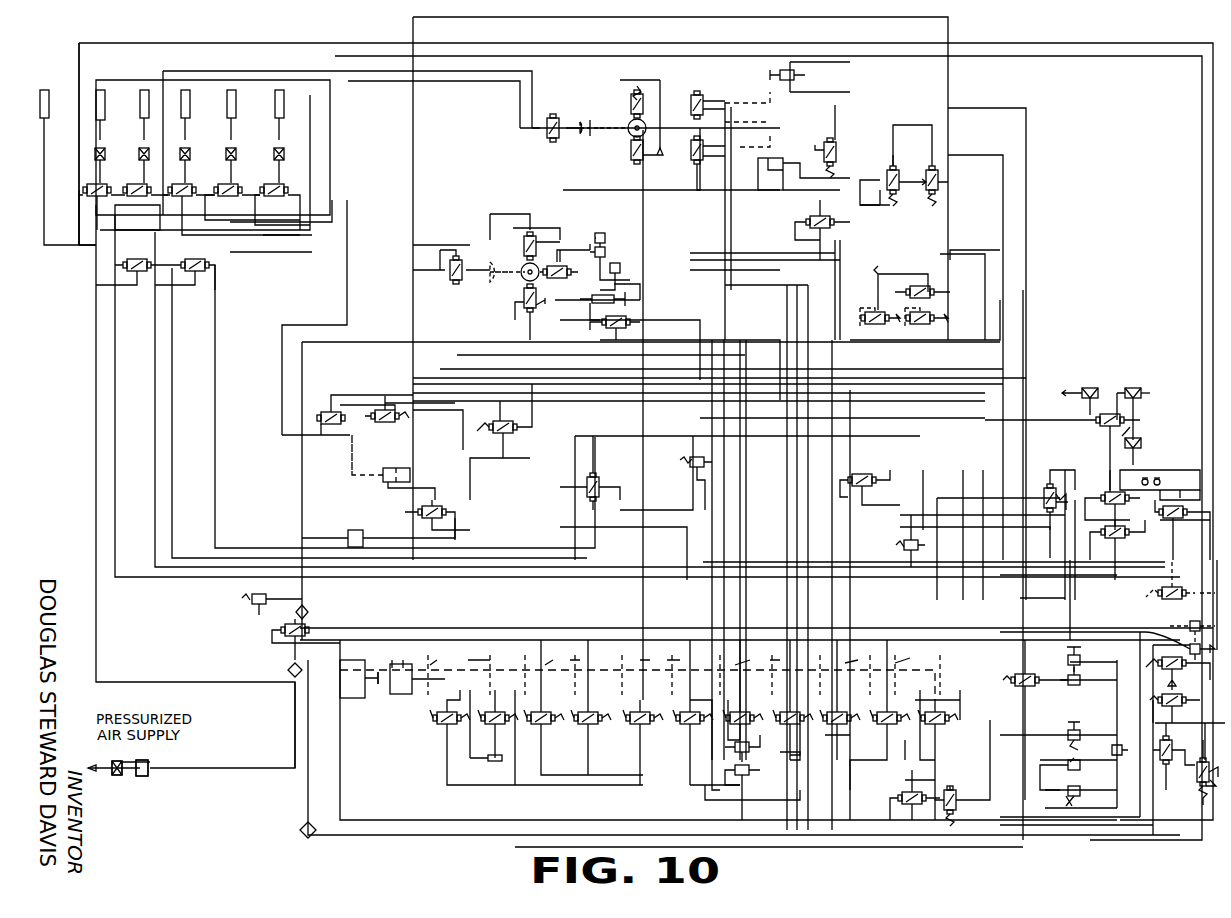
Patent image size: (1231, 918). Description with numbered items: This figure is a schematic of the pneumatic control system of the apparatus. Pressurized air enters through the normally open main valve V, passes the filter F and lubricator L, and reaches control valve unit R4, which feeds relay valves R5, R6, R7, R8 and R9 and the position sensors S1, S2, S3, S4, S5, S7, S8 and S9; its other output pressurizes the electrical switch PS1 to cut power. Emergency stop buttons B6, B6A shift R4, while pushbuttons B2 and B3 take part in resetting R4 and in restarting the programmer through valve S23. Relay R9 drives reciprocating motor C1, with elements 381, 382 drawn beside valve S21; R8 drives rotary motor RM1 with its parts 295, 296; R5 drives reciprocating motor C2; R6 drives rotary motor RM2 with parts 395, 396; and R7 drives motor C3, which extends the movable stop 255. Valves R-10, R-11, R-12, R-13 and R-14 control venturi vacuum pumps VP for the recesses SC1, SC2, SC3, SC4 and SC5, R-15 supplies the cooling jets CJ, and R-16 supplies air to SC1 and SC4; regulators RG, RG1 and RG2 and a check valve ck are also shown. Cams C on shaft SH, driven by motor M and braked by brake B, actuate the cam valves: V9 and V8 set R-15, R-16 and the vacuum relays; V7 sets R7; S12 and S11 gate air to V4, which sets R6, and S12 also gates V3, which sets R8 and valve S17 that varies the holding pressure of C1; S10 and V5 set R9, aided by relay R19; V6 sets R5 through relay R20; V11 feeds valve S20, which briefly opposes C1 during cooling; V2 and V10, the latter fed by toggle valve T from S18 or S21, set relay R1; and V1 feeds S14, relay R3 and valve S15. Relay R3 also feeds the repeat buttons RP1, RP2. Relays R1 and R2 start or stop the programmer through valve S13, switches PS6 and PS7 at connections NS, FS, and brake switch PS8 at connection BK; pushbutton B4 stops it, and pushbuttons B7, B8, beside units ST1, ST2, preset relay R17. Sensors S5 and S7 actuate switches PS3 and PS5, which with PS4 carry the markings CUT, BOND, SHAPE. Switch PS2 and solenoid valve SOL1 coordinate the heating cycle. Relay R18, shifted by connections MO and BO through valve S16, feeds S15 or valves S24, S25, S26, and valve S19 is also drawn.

The cooling air jets CJ is at (40, 105).
The vacuum-clamping recess SC1 is at (113, 135).
The vacuum-clamping recess SC2 is at (140, 98).
The vacuum-clamping recess SC3 is at (198, 136).
The vacuum-clamping recess SC4 is at (244, 136).
The vacuum-clamping recess SC5 is at (292, 136).
The venturi vacuum pump unit VP is at (197, 147).
The control valve unit R-10 is at (106, 205).
The control valve unit R-11 is at (142, 207).
The control valve unit R-12 is at (231, 200).
The control valve unit R-13 is at (252, 192).
The control valve unit R-14 is at (282, 197).
The control valve unit R-15 is at (134, 262).
The control valve unit R-16 is at (205, 265).
The control valve unit R8 is at (552, 120).
The rotary air motor RM1 is at (596, 134).
The position sensing valve unit S9 is at (640, 107).
The cam 296 is at (630, 126).
The cam follower valve 295 is at (630, 150).
The position sensing valve unit S8 is at (646, 166).
The position sensing valve unit S1 is at (697, 96).
The position sensing valve unit S2 is at (735, 163).
The valve 382 is at (770, 100).
The valve 381 is at (759, 132).
The valve unit S21 is at (826, 145).
The reciprocating air motor C1 is at (760, 183).
The control valve unit R9 is at (815, 220).
The signal valve S19 is at (888, 178).
The valve unit S20 is at (940, 190).
The check valve ck is at (891, 200).
The valve unit S17 is at (932, 290).
The regulator RG1 is at (871, 322).
The regulator RG2 is at (925, 320).
The control valve unit R6 is at (456, 258).
The rotary air motor RM2 is at (490, 283).
The cam 396 is at (525, 268).
The position sensing valve unit S7 is at (525, 237).
The cam follower valve 395 is at (525, 292).
The position sensing valve unit S5 is at (532, 315).
The pressure operated switch device PS4 is at (595, 250).
The pressure operated switch device PS5 is at (596, 236).
The bond signal BOND is at (621, 236).
The shape signal SHAPE is at (621, 261).
The cut signal CUT is at (626, 275).
The reciprocating air motor C3 is at (612, 302).
The pressure operated switch device PS3 is at (640, 285).
The movable stop element 255 is at (598, 305).
The control valve unit R7 is at (630, 322).
The position sensing valve unit S4 is at (328, 412).
The position sensing valve unit S3 is at (395, 422).
The valve unit S18 is at (500, 438).
The reciprocating air motor C2 is at (393, 467).
The control valve unit R5 is at (405, 512).
The pressure regulator RG is at (350, 532).
The control valve unit R20 is at (600, 478).
The repeat pushbutton valve unit RP1 is at (685, 463).
The control valve unit R19 is at (868, 478).
The repeat pushbutton valve unit RP2 is at (895, 546).
The normal stop switch NS is at (1080, 383).
The pressure actuated switch PS6 is at (1075, 400).
The fast stop switch FS is at (1129, 404).
The pressure actuated switch PS7 is at (1141, 393).
The valve unit S13 is at (1098, 428).
The pressure actuated switch PS8 is at (1134, 424).
The brake switch BK is at (1140, 440).
The pushbutton valve unit B7 is at (1148, 478).
The pushbutton valve unit B8 is at (1162, 478).
The start valve ST1 is at (1160, 480).
The start valve ST2 is at (1180, 486).
The valve unit S14 is at (1048, 485).
The control valve unit R2 is at (1105, 493).
The control valve unit R1 is at (1117, 550).
The control valve unit R17 is at (1180, 520).
The solenoid-operated valve unit SOL1 is at (1180, 579).
The pressure actuated electrical switch PS2 is at (1193, 605).
The pushbutton operated valve unit S26 is at (1180, 638).
The valve unit S24 is at (1178, 672).
The valve unit S25 is at (1178, 695).
The sheeting forwarding connection MO is at (1190, 734).
The control valve unit R18 is at (1176, 756).
The valve unit S16 is at (1203, 756).
The sheeting braking connection BO is at (1213, 792).
The valve unit S23 is at (1026, 720).
The pushbutton valve unit B4 is at (1074, 664).
The pushbutton valve unit B3 is at (1076, 684).
The pushbutton valve unit B2 is at (1074, 740).
The emergency stop valve unit B6 is at (1068, 774).
The emergency stop valve unit B6A is at (1078, 794).
The control valve unit R3 is at (898, 806).
The valve unit S15 is at (955, 808).
The programmer camshaft SH is at (400, 656).
The drive motor M is at (359, 679).
The brake device B is at (401, 679).
The cam C is at (682, 674).
The cam-actuated valve unit V11 is at (435, 725).
The cam-actuated valve unit V10 is at (494, 724).
The toggle valve T is at (486, 735).
The cam-actuated valve unit V9 is at (579, 712).
The cam-actuated valve unit V8 is at (583, 728).
The cam-actuated valve unit V7 is at (634, 728).
The cam-actuated valve unit V6 is at (686, 728).
The cam-actuated valve unit V4 is at (745, 690).
The cam-actuated valve unit V3 is at (778, 728).
The valve unit S11 is at (752, 760).
The valve unit S10 is at (800, 764).
The valve unit S12 is at (750, 782).
The cam-actuated valve unit V5 is at (834, 700).
The cam-actuated valve unit V2 is at (880, 715).
The cam-actuated valve unit V1 is at (937, 745).
The pressure operated electrical switch PS1 is at (246, 598).
The lubricator L is at (316, 850).
The control valve unit R4 is at (280, 628).
The filter F is at (288, 675).
The main valve V is at (115, 782).